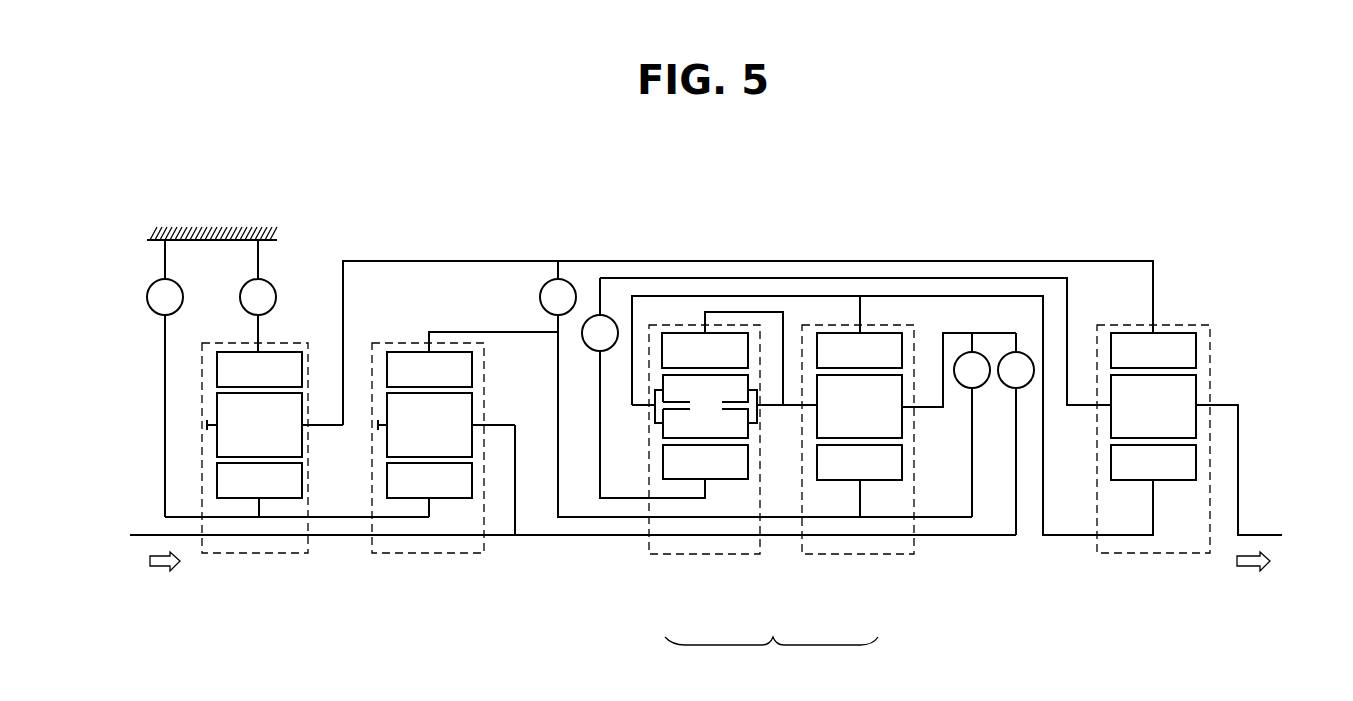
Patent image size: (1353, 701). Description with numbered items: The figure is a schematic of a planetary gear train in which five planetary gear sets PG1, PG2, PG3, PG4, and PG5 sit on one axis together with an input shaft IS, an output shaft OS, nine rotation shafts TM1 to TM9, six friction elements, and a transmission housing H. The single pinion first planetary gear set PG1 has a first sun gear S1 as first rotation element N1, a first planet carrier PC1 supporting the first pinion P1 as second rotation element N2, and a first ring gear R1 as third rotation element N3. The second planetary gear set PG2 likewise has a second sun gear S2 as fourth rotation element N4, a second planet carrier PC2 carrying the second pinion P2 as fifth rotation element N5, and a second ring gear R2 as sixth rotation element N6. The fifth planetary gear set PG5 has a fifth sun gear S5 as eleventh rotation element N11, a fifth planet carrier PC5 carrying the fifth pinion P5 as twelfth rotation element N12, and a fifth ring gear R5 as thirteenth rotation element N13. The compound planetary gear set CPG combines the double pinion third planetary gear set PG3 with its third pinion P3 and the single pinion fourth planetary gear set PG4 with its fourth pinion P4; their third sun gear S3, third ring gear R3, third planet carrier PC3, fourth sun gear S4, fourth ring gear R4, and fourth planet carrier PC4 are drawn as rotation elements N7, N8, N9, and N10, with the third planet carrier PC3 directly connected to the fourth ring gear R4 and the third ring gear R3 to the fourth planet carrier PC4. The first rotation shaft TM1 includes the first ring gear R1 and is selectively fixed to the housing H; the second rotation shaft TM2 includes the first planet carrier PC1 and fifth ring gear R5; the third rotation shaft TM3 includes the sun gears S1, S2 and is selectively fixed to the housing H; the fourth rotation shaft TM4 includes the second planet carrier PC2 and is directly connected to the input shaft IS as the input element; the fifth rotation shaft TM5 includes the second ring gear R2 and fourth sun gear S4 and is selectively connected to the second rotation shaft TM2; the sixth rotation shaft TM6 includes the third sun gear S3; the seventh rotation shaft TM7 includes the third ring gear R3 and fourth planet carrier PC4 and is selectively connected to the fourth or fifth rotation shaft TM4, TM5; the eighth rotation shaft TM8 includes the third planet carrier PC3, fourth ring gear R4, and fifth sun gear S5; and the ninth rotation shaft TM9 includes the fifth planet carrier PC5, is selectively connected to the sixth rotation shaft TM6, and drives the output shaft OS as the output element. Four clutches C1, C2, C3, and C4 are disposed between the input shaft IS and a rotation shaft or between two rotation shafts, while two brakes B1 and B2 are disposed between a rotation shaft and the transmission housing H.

The transmission housing H is at (218, 238).
The brake B1 is at (165, 378).
The brake B2 is at (258, 277).
The clutch C1 is at (1016, 434).
The clutch C2 is at (600, 314).
The clutch C3 is at (972, 425).
The clutch C4 is at (558, 288).
The input shaft IS is at (325, 537).
The output shaft OS is at (1252, 535).
The first planetary gear set PG1 is at (255, 488).
The second planetary gear set PG2 is at (428, 488).
The third planetary gear set PG3 is at (707, 479).
The fourth planetary gear set PG4 is at (858, 479).
The fifth planetary gear set PG5 is at (1153, 479).
The compound planetary gear set CPG is at (771, 660).
The first pinion P1 is at (254, 425).
The second pinion P2 is at (425, 425).
The third pinion gear P3 is at (707, 406).
The fourth pinion gear P4 is at (859, 406).
The fifth pinion P5 is at (1153, 406).
The first rotation element N1 is at (259, 480).
The second rotation element N2 is at (336, 451).
The third rotation element N3 is at (259, 369).
The fourth rotation element N4 is at (429, 480).
The fifth rotation element N5 is at (512, 399).
The sixth rotation element N6 is at (429, 369).
The seventh rotation element N7 is at (859, 481).
The eighth rotation element N8 is at (705, 462).
The ninth rotation element N9 is at (839, 411).
The tenth rotation element N10 is at (752, 407).
The eleventh rotation element N11 is at (1153, 462).
The twelfth rotation element N12 is at (1068, 449).
The thirteenth rotation element N13 is at (1153, 350).
The first sun gear S1 is at (259, 480).
The second sun gear S2 is at (429, 480).
The third sun gear S3 is at (705, 462).
The fourth sun gear S4 is at (859, 481).
The fifth sun gear S5 is at (1153, 462).
The first ring gear R1 is at (259, 369).
The second ring gear R2 is at (429, 369).
The third ring gear R3 is at (705, 350).
The fourth ring gear R4 is at (859, 350).
The fifth ring gear R5 is at (1153, 350).
The first planet carrier PC1 is at (327, 428).
The second planet carrier PC2 is at (497, 422).
The third planet carrier PC3 is at (638, 408).
The fourth planet carrier PC4 is at (923, 408).
The fifth planet carrier PC5 is at (1085, 408).
The first rotation shaft TM1 is at (262, 330).
The second rotation shaft TM2 is at (588, 251).
The third rotation shaft TM3 is at (358, 534).
The fourth rotation shaft TM4 is at (511, 488).
The fifth rotation shaft TM5 is at (572, 530).
The sixth rotation shaft TM6 is at (632, 512).
The seventh rotation shaft TM7 is at (760, 300).
The eighth rotation shaft TM8 is at (953, 285).
The ninth rotation shaft TM9 is at (1075, 290).